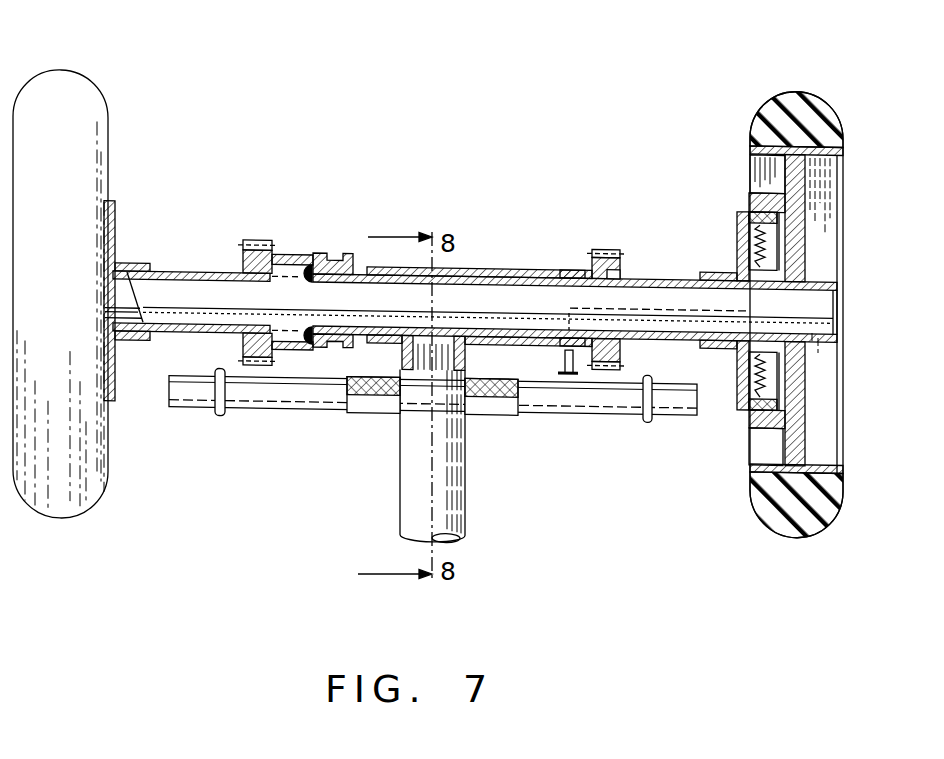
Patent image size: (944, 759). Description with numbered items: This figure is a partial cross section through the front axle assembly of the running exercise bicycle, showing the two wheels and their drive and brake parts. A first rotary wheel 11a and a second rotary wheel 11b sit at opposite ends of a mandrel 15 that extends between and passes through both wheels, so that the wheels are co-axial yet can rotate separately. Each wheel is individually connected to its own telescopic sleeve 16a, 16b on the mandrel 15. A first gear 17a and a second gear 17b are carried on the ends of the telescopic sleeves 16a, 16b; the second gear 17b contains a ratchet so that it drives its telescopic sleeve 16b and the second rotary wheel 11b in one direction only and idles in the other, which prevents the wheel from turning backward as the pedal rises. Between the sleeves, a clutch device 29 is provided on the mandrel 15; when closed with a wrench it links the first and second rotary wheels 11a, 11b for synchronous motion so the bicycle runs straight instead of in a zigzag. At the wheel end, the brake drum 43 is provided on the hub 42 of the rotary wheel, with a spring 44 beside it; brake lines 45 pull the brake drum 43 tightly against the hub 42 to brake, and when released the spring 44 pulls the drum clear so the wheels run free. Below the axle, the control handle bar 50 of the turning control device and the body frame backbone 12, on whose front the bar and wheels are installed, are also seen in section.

The first rotary wheel 11a is at (790, 92).
The second rotary wheel 11b is at (66, 84).
The body frame backbone 12 is at (452, 486).
The mandrel 15 is at (165, 290).
The telescopic sleeve 16a is at (640, 280).
The telescopic sleeve 16b is at (203, 271).
The first gear 17a is at (592, 252).
The second gear 17b is at (253, 240).
The clutch device 29 is at (298, 257).
The hub 42 is at (757, 200).
The brake drum 43 is at (740, 238).
The spring 44 is at (737, 256).
The brake lines 45 is at (545, 330).
The control handle bar 50 is at (576, 414).